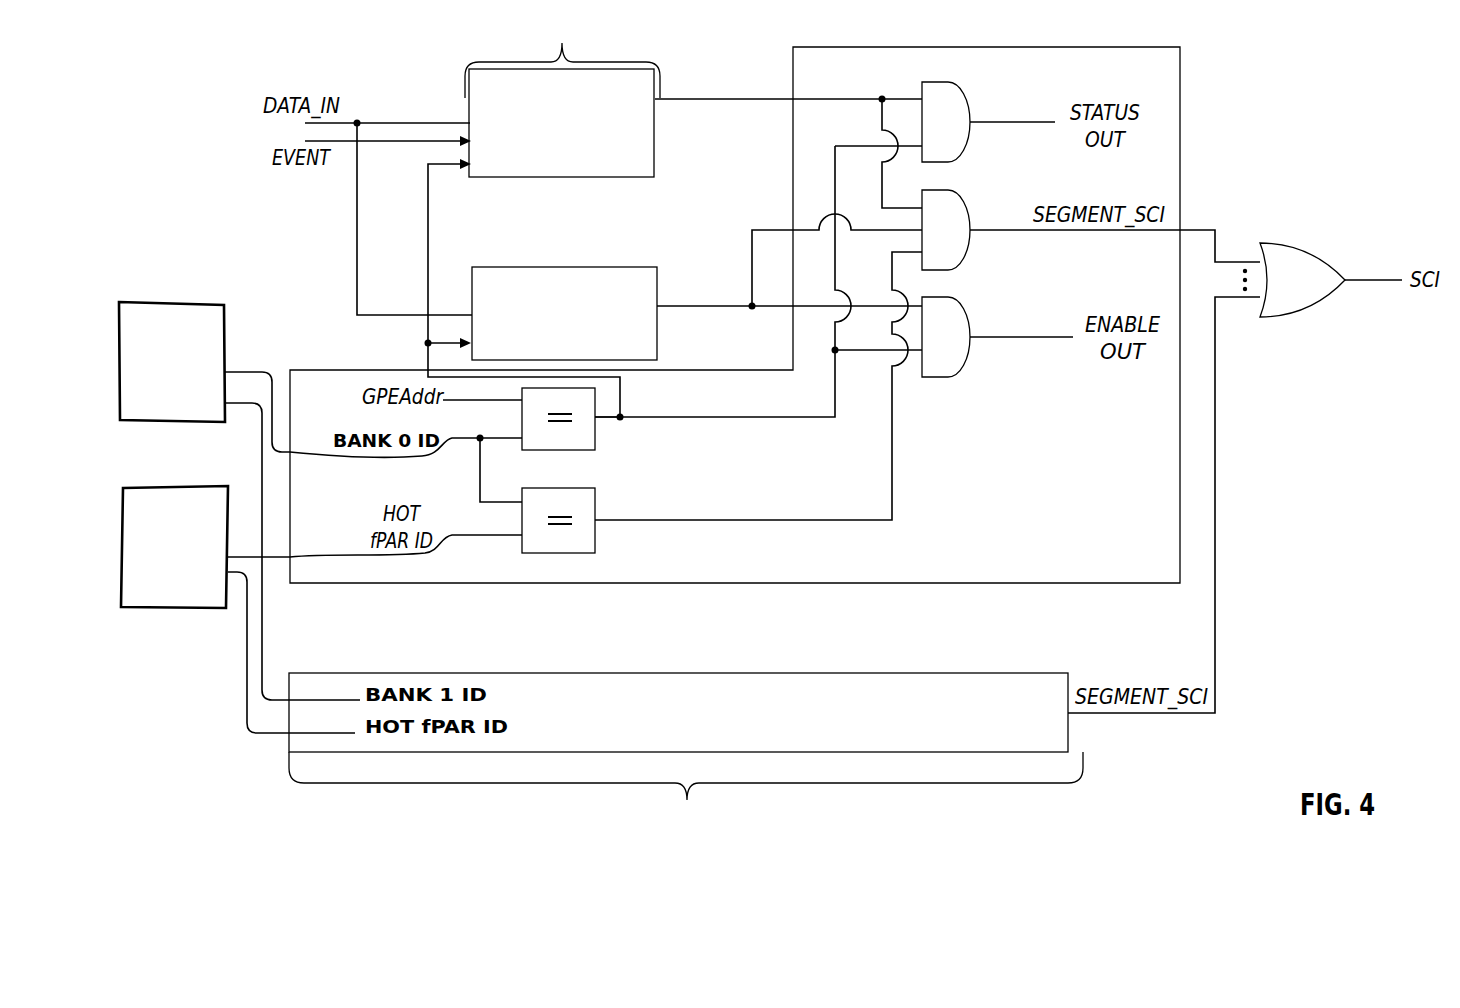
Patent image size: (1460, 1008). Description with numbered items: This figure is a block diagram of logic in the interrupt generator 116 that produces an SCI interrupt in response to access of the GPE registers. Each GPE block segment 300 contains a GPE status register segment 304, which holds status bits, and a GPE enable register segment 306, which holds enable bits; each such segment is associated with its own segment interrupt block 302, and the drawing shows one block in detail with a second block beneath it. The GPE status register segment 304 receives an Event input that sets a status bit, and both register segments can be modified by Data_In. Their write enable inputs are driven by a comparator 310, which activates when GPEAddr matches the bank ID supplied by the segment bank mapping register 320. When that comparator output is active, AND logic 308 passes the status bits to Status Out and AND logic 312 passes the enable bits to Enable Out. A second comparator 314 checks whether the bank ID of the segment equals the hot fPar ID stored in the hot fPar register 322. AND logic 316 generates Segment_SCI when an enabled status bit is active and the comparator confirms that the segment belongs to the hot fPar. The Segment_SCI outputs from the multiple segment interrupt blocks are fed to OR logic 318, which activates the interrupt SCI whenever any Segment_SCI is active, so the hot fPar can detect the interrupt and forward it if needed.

The interrupt generator 116 is at (686, 793).
The GPE block segment 300 is at (562, 58).
The segment interrupt block 302 is at (935, 46).
The GPE status register segment 304 is at (655, 130).
The GPE enable register segment 306 is at (565, 267).
The AND logic 308 is at (963, 92).
The comparator 310 is at (595, 432).
The AND logic 312 is at (960, 300).
The comparator 314 is at (595, 540).
The AND logic 316 is at (958, 196).
The OR logic 318 is at (1300, 242).
The segment bank mapping register 320 is at (150, 303).
The hot fPar register 322 is at (158, 488).